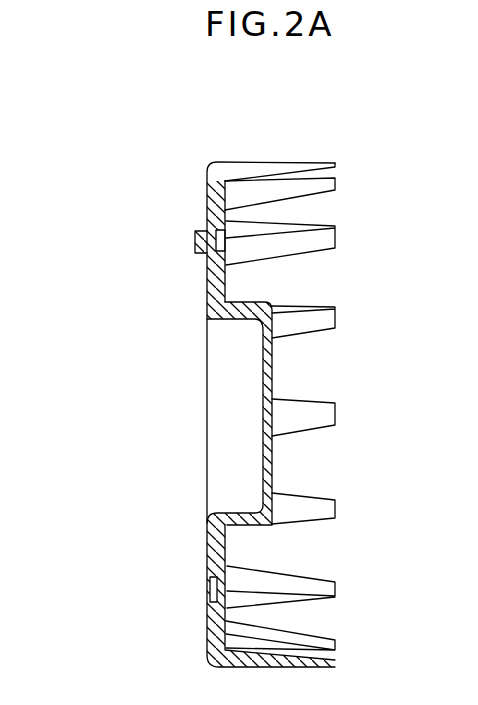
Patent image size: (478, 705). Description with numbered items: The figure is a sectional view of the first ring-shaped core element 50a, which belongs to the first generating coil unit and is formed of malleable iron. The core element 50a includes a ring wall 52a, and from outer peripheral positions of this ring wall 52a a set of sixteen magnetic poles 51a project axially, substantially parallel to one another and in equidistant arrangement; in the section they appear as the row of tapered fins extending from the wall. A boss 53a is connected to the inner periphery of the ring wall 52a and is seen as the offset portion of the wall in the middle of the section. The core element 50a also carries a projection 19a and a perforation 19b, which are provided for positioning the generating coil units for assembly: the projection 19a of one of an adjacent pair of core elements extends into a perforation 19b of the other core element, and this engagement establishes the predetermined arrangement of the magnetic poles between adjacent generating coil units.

The first ring-shaped core element 50a is at (213, 156).
The magnetic poles 51a is at (272, 168).
The ring wall 52a is at (218, 212).
The boss 53a is at (246, 313).
The projection 19a is at (195, 237).
The perforation 19b is at (211, 588).